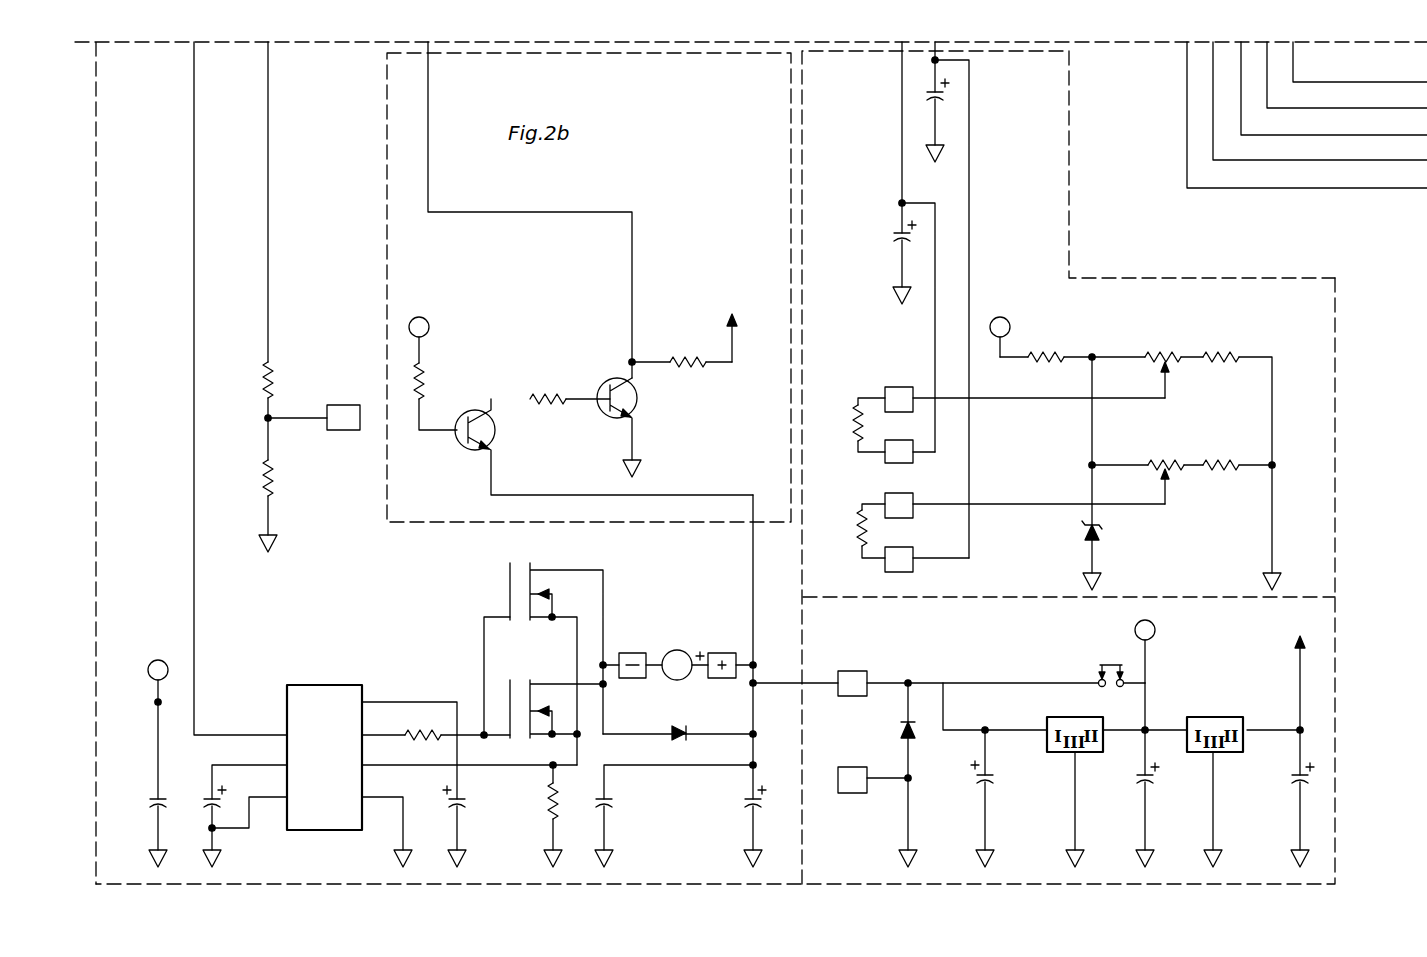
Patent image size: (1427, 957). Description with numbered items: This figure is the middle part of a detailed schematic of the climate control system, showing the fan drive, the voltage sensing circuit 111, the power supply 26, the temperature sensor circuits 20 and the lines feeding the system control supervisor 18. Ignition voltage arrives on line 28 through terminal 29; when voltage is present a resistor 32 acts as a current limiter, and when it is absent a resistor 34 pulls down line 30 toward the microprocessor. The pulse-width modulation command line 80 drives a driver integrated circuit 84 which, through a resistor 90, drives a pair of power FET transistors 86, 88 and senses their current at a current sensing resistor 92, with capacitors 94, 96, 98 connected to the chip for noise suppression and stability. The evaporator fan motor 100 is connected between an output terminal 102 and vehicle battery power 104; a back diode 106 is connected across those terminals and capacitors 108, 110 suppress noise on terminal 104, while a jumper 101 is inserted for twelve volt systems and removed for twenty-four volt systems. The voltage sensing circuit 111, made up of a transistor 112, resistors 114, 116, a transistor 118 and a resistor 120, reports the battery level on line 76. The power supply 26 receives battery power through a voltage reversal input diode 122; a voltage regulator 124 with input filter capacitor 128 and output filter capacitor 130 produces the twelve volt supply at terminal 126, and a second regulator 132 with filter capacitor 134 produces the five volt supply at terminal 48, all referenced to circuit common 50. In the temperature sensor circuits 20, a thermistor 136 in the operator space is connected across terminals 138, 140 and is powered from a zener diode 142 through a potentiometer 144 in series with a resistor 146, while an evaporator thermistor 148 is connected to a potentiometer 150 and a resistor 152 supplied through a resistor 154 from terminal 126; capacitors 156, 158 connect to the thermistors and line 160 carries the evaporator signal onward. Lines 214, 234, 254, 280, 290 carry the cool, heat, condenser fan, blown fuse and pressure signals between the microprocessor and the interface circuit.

The system control supervisor 18 is at (1140, 252).
The temperature sensor circuits 20 is at (1285, 311).
The power supply 26 is at (1130, 853).
The line 28 is at (305, 418).
The terminal 29 is at (345, 405).
The line 30 is at (268, 218).
The resistor 32 is at (268, 380).
The resistor 34 is at (272, 478).
The VDD supply 48 is at (734, 328).
The circuit common 50 is at (1092, 570).
The line 76 is at (428, 78).
The pulse-width modulation command line 80 is at (194, 216).
The driver integrated circuit 84 is at (325, 685).
The power FET transistor 86 is at (510, 578).
The power FET transistor 88 is at (510, 700).
The resistor 90 is at (410, 728).
The current sensing resistor 92 is at (553, 805).
The capacitor 94 is at (462, 805).
The capacitor 96 is at (157, 797).
The capacitor 98 is at (212, 803).
The evaporator fan motor 100 is at (675, 650).
The jumper 101 is at (1110, 664).
The output terminal 102 is at (630, 653).
The vehicle battery power VBB 104 is at (722, 653).
The back diode 106 is at (676, 728).
The capacitor 108 is at (612, 803).
The capacitor 110 is at (750, 808).
The voltage sensing circuit 111 is at (745, 165).
The transistor 112 is at (493, 440).
The resistor 114 is at (422, 378).
The resistor 116 is at (535, 392).
The transistor 118 is at (636, 408).
The resistor 120 is at (675, 356).
The voltage reversal input diode 122 is at (905, 735).
The integrated circuit voltage regulator 124 is at (1080, 717).
The VCC terminal 126 is at (428, 330).
The capacitor 128 is at (992, 782).
The capacitor 130 is at (1140, 782).
The integrated circuit regulator 132 is at (1212, 717).
The capacitor 134 is at (1296, 782).
The thermistor 136 is at (862, 530).
The terminal 138 is at (912, 493).
The terminal 140 is at (913, 547).
The zener diode 142 is at (1100, 533).
The potentiometer 144 is at (1153, 462).
The resistor 146 is at (1233, 462).
The thermistor 148 is at (860, 418).
The potentiometer 150 is at (1158, 355).
The resistor 152 is at (1235, 357).
The resistor 154 is at (1043, 352).
The capacitor 156 is at (945, 97).
The capacitor 158 is at (900, 236).
The line 160 is at (915, 456).
The line 214 is at (1293, 52).
The line 234 is at (1267, 83).
The condenser fan line 254 is at (1250, 138).
The line 280 is at (1258, 160).
The line 290 is at (1296, 190).